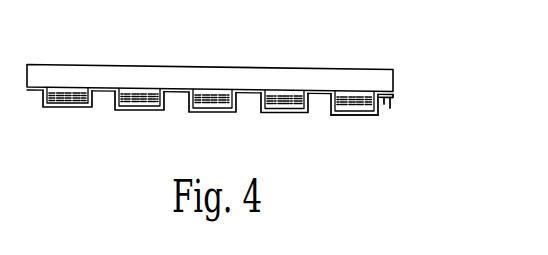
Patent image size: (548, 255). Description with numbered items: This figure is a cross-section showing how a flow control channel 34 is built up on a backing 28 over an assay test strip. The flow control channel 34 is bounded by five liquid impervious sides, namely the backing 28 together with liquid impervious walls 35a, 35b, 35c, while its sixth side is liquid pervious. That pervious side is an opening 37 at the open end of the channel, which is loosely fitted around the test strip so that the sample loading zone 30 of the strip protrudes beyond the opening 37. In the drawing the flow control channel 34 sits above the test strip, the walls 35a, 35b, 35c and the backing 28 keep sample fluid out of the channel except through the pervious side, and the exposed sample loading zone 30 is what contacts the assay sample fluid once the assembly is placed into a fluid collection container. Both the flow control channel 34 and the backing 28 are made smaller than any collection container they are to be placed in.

The backing 28 is at (80, 78).
The opening 37 is at (132, 88).
The sample loading zone 30 is at (48, 108).
The flow control channel 34 is at (68, 104).
The liquid impervious wall 35a is at (326, 113).
The liquid impervious wall 35b is at (357, 116).
The liquid impervious wall 35c is at (386, 110).